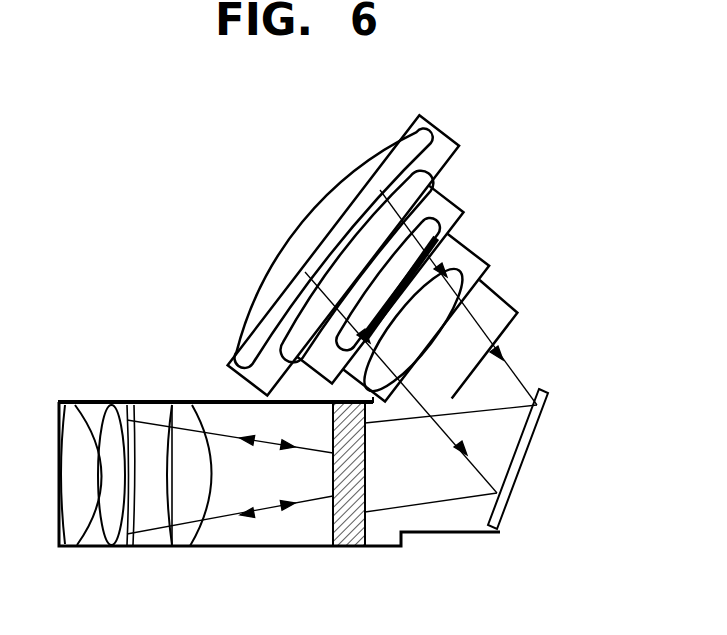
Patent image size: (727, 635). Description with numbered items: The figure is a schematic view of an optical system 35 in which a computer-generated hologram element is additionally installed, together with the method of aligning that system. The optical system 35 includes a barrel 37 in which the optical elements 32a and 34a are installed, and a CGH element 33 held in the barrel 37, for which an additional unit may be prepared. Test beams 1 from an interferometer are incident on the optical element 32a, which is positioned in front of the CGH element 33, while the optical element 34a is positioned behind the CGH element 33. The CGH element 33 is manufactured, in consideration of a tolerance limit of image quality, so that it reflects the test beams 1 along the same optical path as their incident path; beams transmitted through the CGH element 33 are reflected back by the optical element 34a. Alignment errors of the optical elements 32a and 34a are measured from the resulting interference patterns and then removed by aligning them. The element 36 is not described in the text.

The test beams 1 is at (482, 327).
The optical element 32a is at (115, 528).
The CGH element 33 is at (348, 548).
The optical element 34a is at (373, 157).
The optical system 35 is at (319, 293).
The mirror 36 is at (518, 457).
The barrel 37 is at (452, 543).